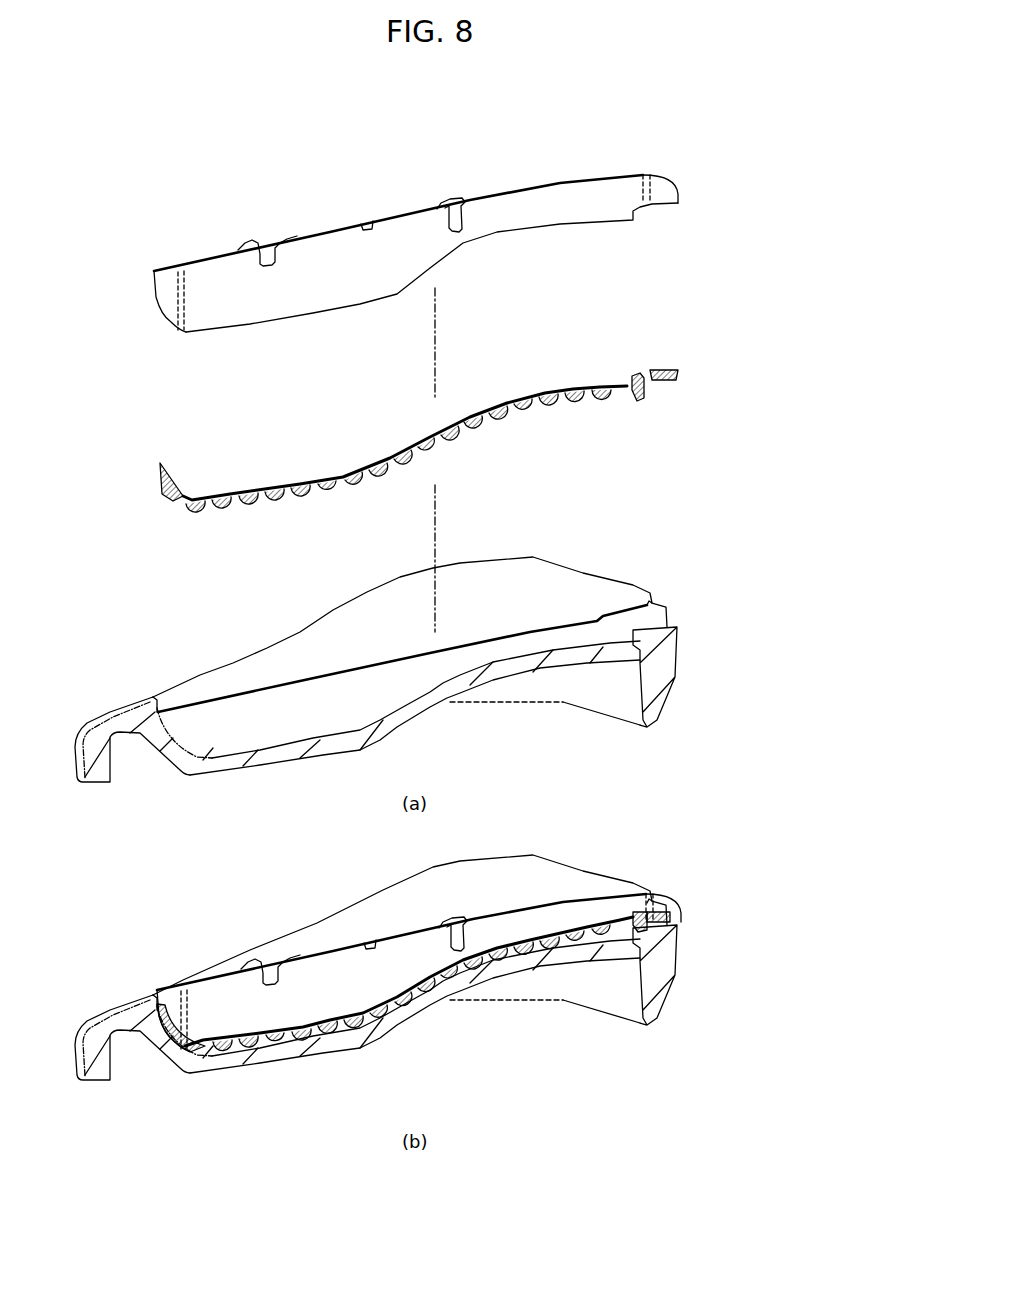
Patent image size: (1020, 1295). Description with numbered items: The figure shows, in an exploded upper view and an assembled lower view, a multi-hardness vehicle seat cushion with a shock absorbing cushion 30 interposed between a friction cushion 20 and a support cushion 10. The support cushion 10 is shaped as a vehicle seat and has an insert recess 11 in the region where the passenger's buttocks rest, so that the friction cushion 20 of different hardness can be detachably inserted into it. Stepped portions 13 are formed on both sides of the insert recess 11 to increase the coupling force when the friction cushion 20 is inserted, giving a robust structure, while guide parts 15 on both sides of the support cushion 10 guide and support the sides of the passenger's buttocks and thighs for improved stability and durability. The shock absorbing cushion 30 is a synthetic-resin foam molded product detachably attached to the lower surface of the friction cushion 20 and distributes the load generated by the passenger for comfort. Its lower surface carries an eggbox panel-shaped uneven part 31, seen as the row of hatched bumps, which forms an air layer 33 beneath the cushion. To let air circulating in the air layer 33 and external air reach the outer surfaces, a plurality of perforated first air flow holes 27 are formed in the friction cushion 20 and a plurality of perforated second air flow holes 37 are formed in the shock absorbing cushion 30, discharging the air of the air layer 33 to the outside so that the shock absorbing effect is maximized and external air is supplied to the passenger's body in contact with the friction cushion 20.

The support cushion 10 is at (510, 693).
The insert recess 11 is at (208, 753).
The stepped portion 13 is at (670, 620).
The guide part 15 is at (550, 602).
The friction cushion 20 is at (338, 272).
The first air flow hole 27 is at (182, 272).
The shock absorbing cushion 30 is at (342, 477).
The uneven part 31 is at (676, 380).
The air layer 33 is at (595, 397).
The second air flow hole 37 is at (182, 494).